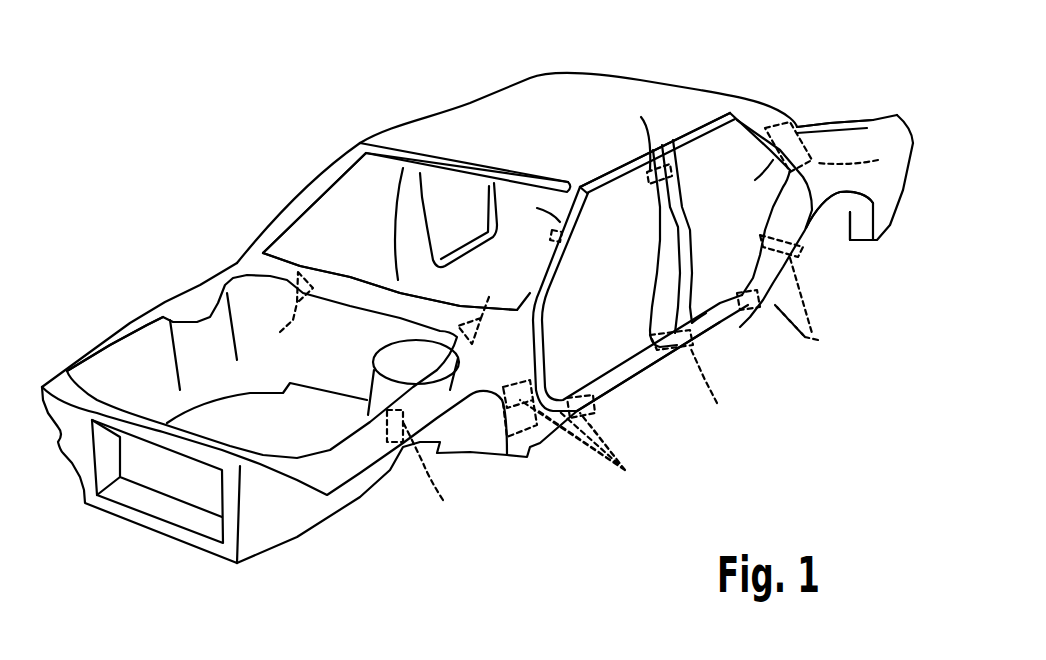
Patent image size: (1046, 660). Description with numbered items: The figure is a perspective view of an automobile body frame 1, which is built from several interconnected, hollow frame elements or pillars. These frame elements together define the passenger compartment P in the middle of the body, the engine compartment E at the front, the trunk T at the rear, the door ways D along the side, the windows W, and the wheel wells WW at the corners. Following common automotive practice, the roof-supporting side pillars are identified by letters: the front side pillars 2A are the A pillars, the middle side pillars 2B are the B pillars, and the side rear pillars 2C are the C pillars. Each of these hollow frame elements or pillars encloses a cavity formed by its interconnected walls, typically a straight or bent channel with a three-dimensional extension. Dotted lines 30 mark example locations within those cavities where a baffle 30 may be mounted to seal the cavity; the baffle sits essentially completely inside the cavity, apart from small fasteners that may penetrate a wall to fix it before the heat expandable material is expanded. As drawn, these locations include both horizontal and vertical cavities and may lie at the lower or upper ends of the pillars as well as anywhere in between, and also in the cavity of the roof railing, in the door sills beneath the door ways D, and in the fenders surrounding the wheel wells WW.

The automobile body frame 1 is at (530, 90).
The front side pillar 2A is at (555, 273).
The middle side pillar 2B is at (680, 240).
The side rear pillar 2C is at (770, 123).
The baffle 30 is at (580, 312).
The window W is at (350, 220).
The wheel well WW is at (850, 210).
The passenger compartment P is at (618, 244).
The engine compartment E is at (277, 438).
The door way D is at (605, 340).
The trunk T is at (843, 123).